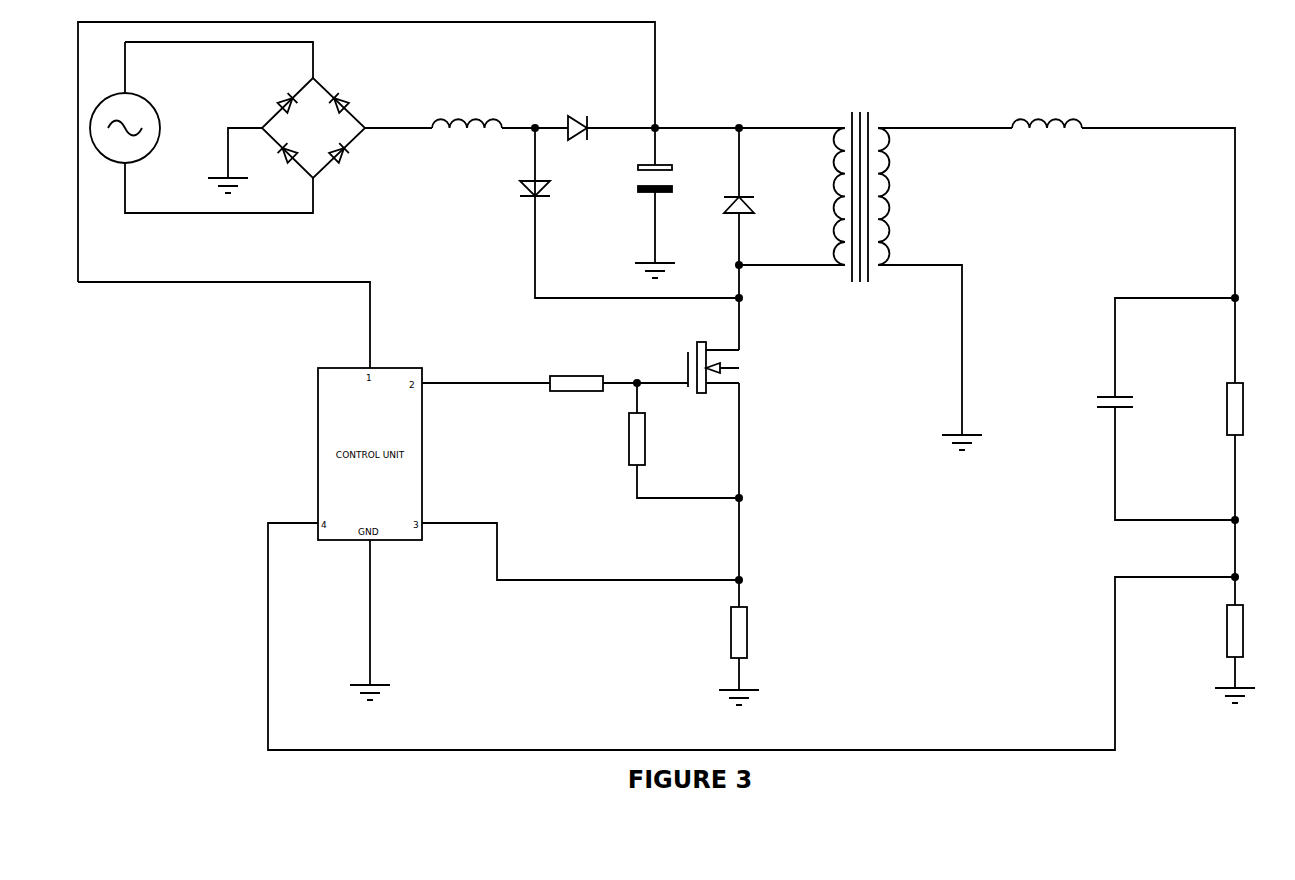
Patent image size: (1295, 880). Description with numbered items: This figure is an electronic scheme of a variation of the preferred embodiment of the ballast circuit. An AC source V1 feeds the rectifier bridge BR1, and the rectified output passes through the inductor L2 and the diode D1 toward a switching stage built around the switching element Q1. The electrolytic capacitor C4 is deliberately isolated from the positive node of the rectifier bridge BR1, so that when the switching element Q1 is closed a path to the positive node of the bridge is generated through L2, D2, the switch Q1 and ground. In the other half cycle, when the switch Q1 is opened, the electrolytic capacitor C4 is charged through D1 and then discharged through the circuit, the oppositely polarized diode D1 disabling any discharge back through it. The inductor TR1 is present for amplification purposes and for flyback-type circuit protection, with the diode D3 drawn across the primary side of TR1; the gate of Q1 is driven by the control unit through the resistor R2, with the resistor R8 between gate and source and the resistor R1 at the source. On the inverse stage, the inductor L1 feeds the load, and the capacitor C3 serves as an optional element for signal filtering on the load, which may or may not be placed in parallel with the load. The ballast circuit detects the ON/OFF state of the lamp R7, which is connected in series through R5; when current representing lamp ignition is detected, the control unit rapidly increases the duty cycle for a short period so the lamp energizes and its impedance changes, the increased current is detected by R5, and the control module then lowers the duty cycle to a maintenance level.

The AC voltage source V1 is at (140, 128).
The rectifier bridge BR1 is at (313, 115).
The inductor L2 is at (466, 117).
The diode D1 is at (577, 114).
The diode D2 is at (550, 190).
The electrolytic capacitor C4 is at (677, 180).
The diode D3 is at (756, 207).
The inductor TR1 is at (846, 185).
The inductor 2mH L1 is at (1046, 117).
The switching element Q1 is at (711, 365).
The resistor 10 ohm R2 is at (529, 381).
The resistor 1k R8 is at (684, 440).
The resistor R1 is at (754, 632).
The capacitor C3 is at (1135, 408).
The lamp R7 is at (1249, 409).
The resistor R5 is at (1249, 631).